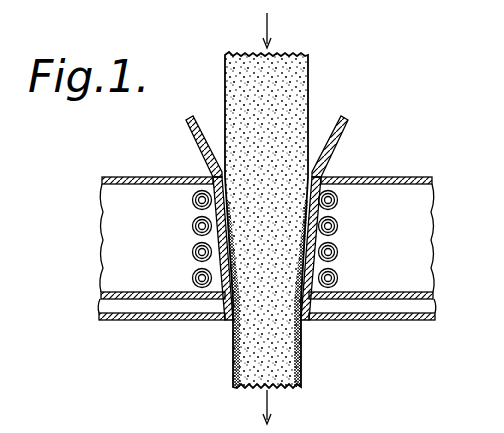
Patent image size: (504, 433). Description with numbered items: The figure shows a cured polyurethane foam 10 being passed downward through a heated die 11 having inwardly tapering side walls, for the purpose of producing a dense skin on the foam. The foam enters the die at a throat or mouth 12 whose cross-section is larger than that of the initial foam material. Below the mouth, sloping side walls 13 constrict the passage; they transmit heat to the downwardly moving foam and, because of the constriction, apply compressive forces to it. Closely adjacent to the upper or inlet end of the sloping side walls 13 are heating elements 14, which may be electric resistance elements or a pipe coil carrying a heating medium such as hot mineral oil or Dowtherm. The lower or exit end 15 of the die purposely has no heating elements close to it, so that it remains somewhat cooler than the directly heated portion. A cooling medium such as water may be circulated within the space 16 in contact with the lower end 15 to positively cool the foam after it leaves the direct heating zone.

The cured polyurethane foam 10 is at (306, 85).
The heated die 11 is at (359, 172).
The throat or mouth 12 is at (193, 129).
The sloping side walls 13 is at (208, 182).
The heating elements 14 is at (197, 249).
The lower or exit end 15 is at (222, 304).
The space 16 is at (337, 308).